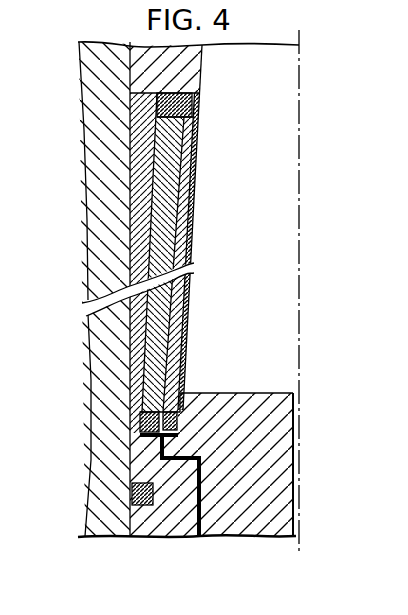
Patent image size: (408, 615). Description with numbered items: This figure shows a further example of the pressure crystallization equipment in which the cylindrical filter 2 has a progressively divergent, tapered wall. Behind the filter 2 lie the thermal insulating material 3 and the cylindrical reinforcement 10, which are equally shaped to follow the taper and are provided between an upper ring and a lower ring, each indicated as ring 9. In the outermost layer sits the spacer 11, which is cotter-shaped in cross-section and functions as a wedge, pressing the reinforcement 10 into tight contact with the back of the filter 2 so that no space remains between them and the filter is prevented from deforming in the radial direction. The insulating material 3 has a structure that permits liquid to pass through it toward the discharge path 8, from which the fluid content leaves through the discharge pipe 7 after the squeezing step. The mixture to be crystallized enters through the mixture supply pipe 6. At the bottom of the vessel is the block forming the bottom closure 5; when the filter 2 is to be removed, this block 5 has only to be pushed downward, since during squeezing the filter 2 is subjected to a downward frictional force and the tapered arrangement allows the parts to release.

The filter 2 is at (198, 153).
The thermal insulating material 3 is at (195, 208).
The bottom closure 5 is at (280, 430).
The mixture supply pipe 6 is at (294, 497).
The discharge pipe 7 is at (199, 535).
The path 8 is at (163, 466).
The ring 9 is at (200, 97).
The cylindrical reinforcement 10 is at (130, 328).
The spacer 11 is at (130, 125).